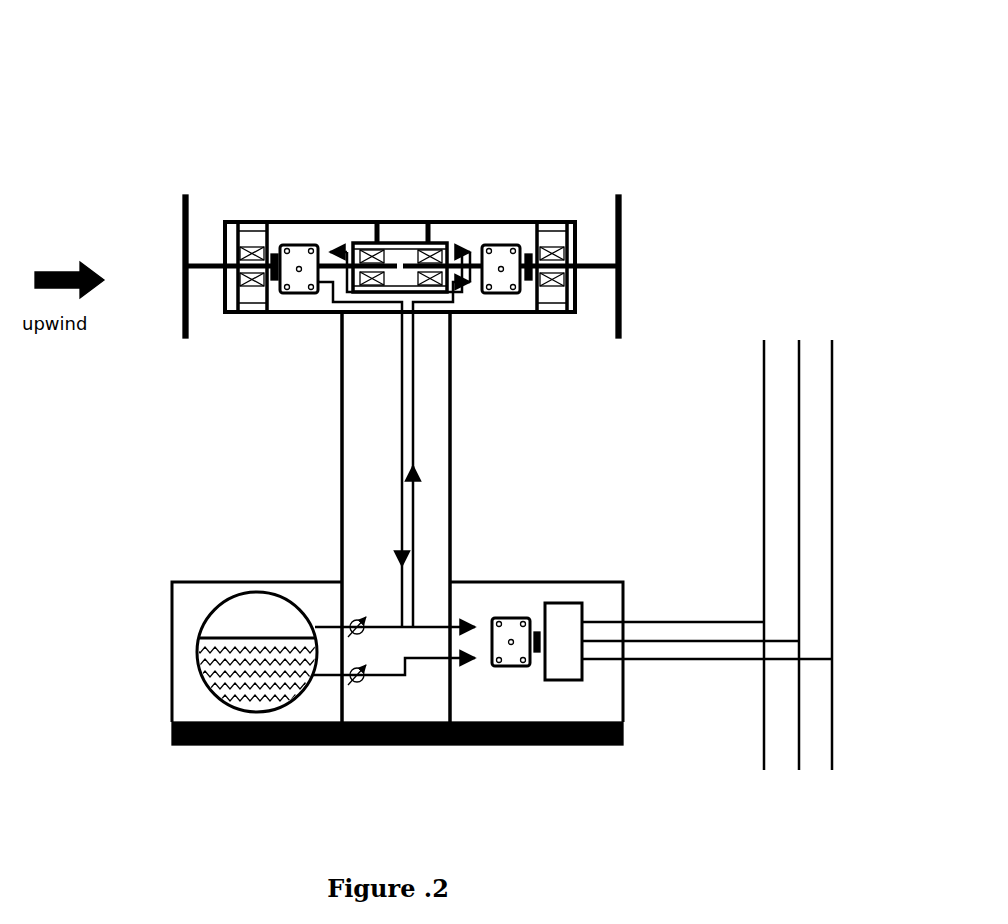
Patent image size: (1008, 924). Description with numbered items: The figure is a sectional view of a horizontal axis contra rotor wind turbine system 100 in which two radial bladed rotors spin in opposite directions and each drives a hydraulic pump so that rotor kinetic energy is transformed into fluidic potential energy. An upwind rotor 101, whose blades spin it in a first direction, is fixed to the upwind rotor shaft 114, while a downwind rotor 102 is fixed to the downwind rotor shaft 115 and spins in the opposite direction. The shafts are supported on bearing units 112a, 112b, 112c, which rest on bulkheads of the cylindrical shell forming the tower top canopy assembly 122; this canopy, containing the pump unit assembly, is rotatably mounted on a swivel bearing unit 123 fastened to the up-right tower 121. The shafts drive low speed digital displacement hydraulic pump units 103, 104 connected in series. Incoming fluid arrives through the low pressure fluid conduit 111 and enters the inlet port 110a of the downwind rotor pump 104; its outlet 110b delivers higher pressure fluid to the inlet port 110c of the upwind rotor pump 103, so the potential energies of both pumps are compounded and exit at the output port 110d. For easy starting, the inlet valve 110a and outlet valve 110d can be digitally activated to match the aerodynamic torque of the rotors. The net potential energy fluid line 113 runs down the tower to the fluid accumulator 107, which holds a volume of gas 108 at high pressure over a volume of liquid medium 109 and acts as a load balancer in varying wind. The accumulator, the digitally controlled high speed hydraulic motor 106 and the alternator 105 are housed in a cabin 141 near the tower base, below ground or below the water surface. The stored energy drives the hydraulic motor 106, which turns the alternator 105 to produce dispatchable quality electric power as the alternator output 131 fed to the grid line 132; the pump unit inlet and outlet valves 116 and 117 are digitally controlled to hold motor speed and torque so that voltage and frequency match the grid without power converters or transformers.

The horizontal axis contra rotor wind turbine system 100 is at (112, 88).
The upwind rotor 101 is at (178, 313).
The downwind rotor 102 is at (622, 301).
The upwind rotor pump 103 is at (282, 243).
The downwind rotor pump 104 is at (497, 243).
The alternator 105 is at (560, 625).
The hydraulic motor 106 is at (495, 616).
The fluid accumulator 107 is at (199, 631).
The gas 108 is at (248, 620).
The liquid medium 109 is at (226, 694).
The inlet port 110a is at (468, 250).
The outlet 110b is at (466, 286).
The inlet port 110c is at (334, 250).
The output port 110d is at (334, 294).
The low pressure fluid conduit 111 is at (418, 430).
The bearing unit 112a is at (258, 228).
The bearing unit 112b is at (552, 232).
The bearing unit 112c is at (365, 298).
The net potential energy fluid line 113 is at (396, 457).
The upwind rotor shaft 114 is at (212, 280).
The downwind rotor shaft 115 is at (622, 262).
The inlet valve 116 is at (354, 685).
The outlet valve 117 is at (346, 610).
The up-right tower 121 is at (452, 386).
The tower top canopy assembly 122 is at (395, 243).
The swivel bearing unit 123 is at (480, 308).
The alternator output 131 is at (616, 625).
The grid line 132 is at (806, 606).
The cabin 141 is at (172, 707).